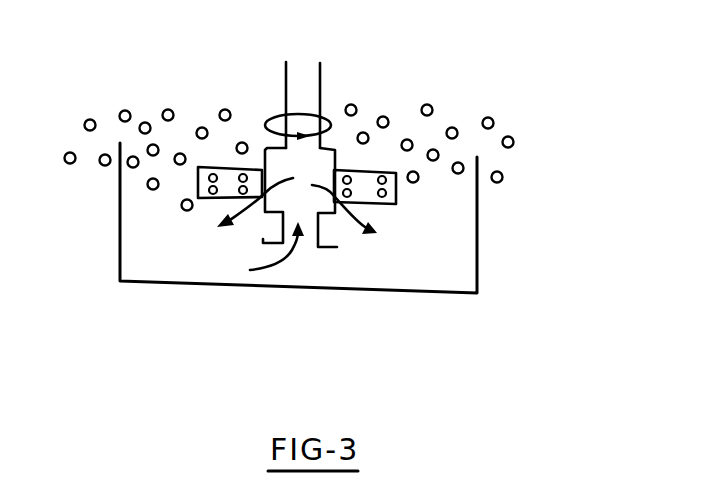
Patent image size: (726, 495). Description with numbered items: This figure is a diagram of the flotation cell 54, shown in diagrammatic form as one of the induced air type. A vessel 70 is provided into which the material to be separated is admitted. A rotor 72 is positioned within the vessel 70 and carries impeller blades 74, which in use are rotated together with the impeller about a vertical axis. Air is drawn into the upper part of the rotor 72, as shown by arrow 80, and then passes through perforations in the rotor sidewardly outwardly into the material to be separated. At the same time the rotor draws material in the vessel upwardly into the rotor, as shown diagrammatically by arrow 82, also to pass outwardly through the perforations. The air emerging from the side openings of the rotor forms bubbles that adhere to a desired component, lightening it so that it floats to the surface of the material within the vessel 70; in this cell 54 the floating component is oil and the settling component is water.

The flotation cell 54 is at (538, 216).
The vessel 70 is at (477, 265).
The rotor 72 is at (326, 96).
The impeller blades 74 is at (398, 190).
The arrow 80 is at (298, 88).
The arrow 82 is at (270, 270).